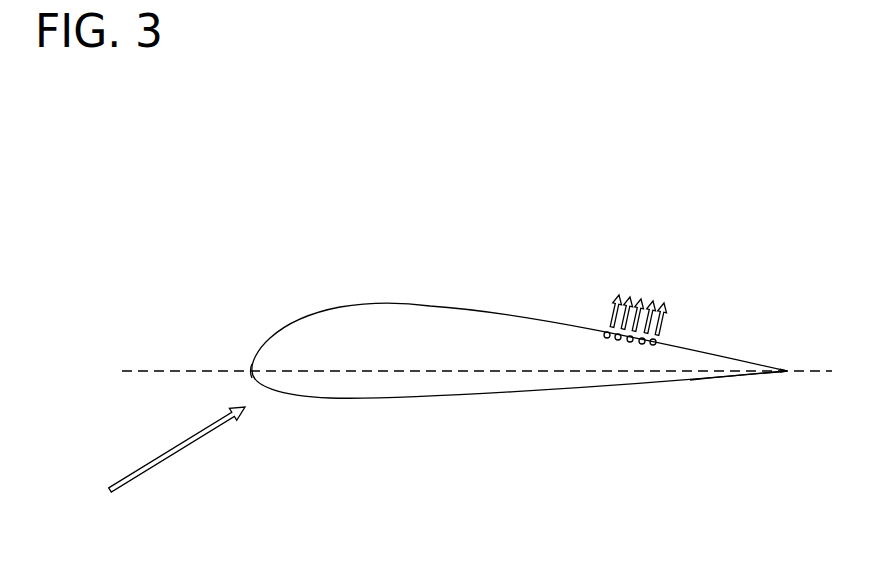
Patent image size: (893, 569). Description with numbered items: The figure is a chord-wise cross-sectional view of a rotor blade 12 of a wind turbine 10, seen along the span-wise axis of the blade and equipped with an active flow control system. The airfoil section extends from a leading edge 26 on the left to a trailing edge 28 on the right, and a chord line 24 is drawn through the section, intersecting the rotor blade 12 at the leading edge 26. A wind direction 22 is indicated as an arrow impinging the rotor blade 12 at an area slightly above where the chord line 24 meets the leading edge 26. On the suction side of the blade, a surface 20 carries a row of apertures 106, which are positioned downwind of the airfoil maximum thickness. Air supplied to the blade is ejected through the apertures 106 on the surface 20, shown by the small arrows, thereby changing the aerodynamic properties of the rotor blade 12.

The wind turbine 10 is at (708, 172).
The rotor blade 12 is at (517, 263).
The surface 20 is at (715, 362).
The wind direction 22 is at (228, 422).
The chord line 24 is at (140, 369).
The leading edge 26 is at (252, 370).
The trailing edge 28 is at (787, 371).
The aperture 106 is at (633, 342).